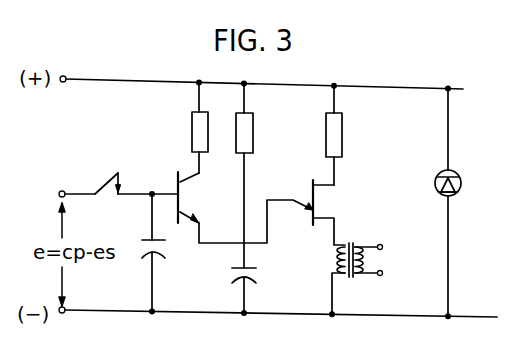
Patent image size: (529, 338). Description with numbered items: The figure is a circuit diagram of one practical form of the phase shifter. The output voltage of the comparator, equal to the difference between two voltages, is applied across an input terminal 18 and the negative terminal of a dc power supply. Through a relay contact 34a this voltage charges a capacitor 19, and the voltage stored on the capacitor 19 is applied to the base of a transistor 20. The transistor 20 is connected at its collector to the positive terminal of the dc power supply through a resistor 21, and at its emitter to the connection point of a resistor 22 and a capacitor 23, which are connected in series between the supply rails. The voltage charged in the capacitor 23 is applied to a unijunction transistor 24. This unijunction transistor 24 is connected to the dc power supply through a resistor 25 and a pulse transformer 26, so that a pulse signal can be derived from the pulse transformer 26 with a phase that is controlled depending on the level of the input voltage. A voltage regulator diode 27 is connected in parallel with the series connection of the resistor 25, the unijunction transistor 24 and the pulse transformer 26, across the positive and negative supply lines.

The input terminal 18 is at (62, 193).
The capacitor 19 is at (161, 249).
The transistor 20 is at (182, 198).
The resistor 21 is at (192, 131).
The resistor 22 is at (253, 120).
The capacitor 23 is at (254, 276).
The unijunction transistor 24 is at (317, 203).
The resistor 25 is at (342, 123).
The pulse transformer 26 is at (368, 246).
The voltage regulator diode 27 is at (461, 180).
The contact 34a is at (114, 172).